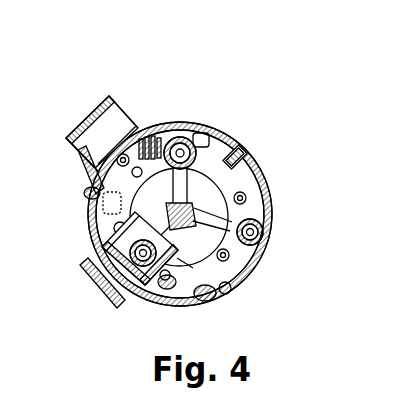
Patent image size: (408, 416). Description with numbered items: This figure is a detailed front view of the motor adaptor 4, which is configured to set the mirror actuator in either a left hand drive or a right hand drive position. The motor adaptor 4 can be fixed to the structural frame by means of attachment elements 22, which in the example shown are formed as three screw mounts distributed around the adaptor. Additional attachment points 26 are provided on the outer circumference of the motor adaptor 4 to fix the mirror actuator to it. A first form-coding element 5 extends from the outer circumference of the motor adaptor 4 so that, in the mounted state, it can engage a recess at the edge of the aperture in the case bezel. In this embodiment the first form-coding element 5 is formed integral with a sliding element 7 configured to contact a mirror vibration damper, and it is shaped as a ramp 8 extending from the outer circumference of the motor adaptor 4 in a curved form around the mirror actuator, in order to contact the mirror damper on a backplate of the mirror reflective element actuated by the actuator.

The motor adaptor 4 is at (286, 60).
The first form-coding element 5 is at (98, 102).
The sliding element 7 is at (100, 135).
The ramp 8 is at (67, 147).
The attachment elements 22 is at (182, 147).
The additional attachment points 26 is at (241, 152).